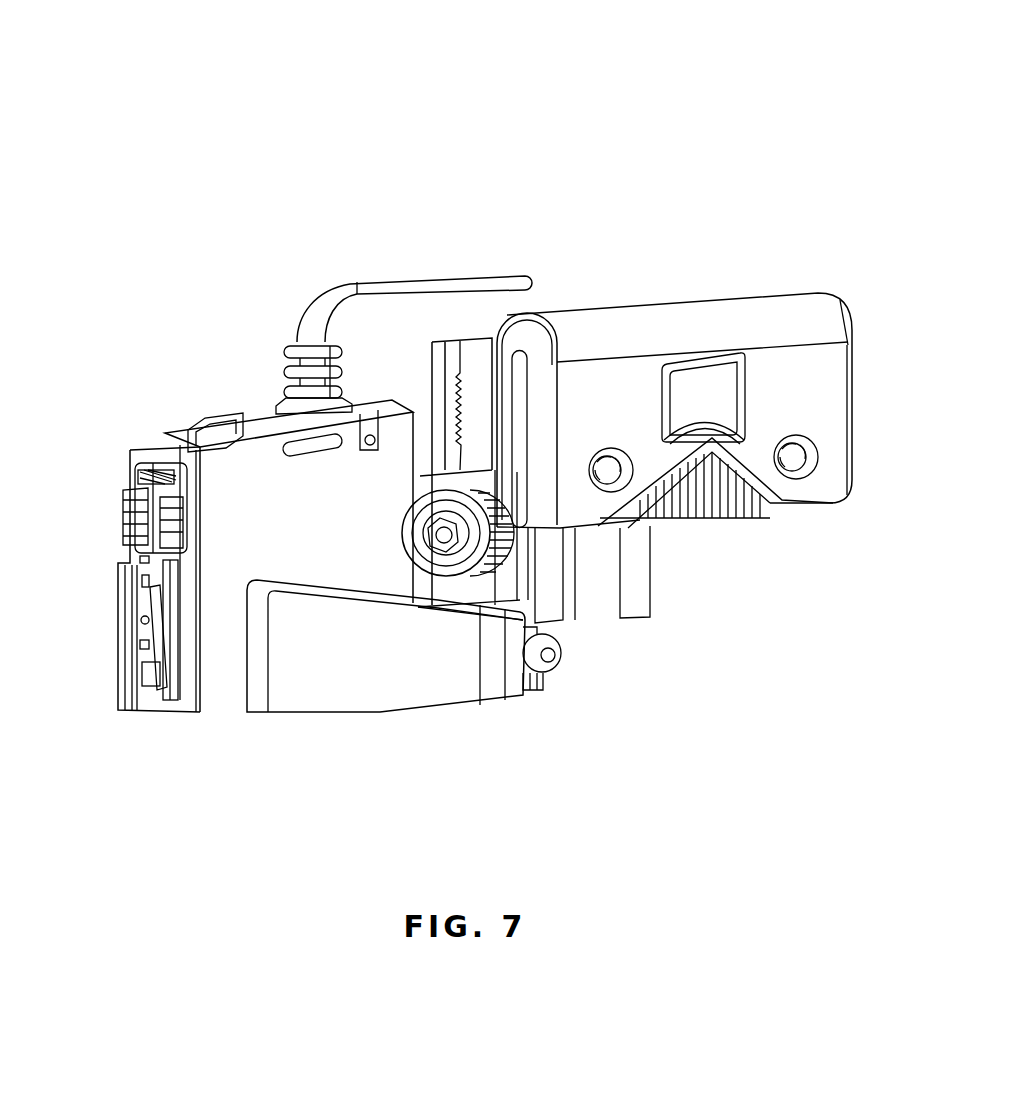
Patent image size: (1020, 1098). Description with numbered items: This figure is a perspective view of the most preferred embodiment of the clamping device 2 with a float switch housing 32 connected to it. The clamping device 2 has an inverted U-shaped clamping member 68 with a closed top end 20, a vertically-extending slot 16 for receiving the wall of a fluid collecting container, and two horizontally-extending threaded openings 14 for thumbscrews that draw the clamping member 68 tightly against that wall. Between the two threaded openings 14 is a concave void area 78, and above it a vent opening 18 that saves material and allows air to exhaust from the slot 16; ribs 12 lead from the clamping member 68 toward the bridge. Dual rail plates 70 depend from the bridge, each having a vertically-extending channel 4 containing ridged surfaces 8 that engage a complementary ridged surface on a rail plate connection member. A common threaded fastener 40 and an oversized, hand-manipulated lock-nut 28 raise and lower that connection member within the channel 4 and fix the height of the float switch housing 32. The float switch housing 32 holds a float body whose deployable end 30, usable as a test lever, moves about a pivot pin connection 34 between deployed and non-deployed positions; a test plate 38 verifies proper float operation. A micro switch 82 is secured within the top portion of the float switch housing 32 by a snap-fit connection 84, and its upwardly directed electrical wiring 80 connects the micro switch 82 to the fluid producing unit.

The clamping device 2 is at (693, 92).
The vertically-extending channel 4 is at (479, 355).
The ridged surface 8 is at (470, 412).
The ribs 12 is at (740, 490).
The threaded openings 14 is at (610, 448).
The slot 16 is at (518, 430).
The vent opening 18 is at (713, 403).
The closed top end 20 is at (755, 293).
The lock-nut 28 is at (437, 487).
The deployable end 30 is at (170, 690).
The float switch housing 32 is at (328, 687).
The pivot pin connection 34 is at (548, 663).
The test plate 38 is at (138, 527).
The threaded fastener 40 is at (440, 540).
The clamping member 68 is at (823, 373).
The rail plate 70 is at (448, 350).
The void area 78 is at (706, 456).
The electrical wiring 80 is at (395, 287).
The micro switch 82 is at (215, 410).
The snap-fit connection 84 is at (317, 447).